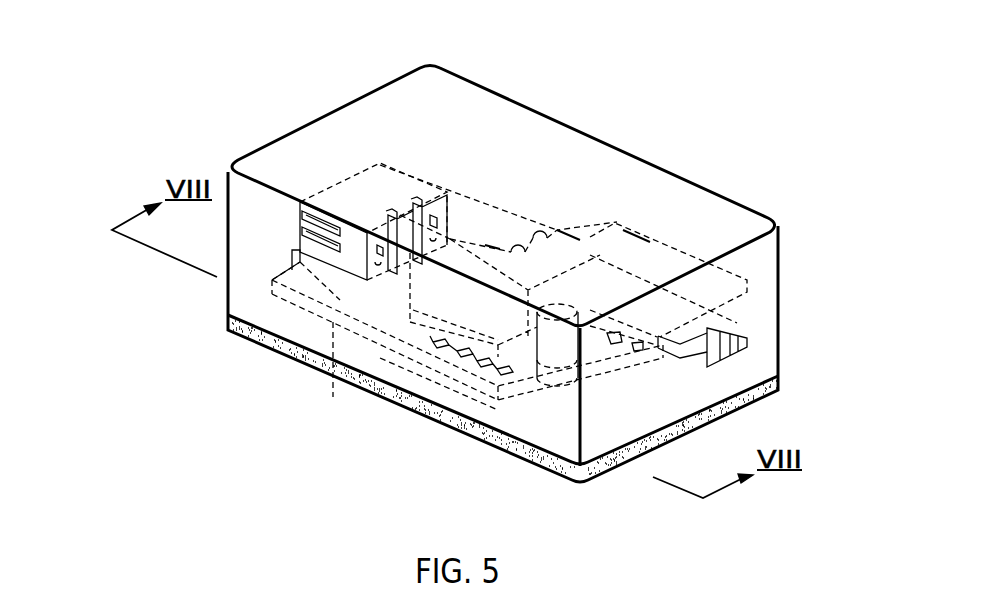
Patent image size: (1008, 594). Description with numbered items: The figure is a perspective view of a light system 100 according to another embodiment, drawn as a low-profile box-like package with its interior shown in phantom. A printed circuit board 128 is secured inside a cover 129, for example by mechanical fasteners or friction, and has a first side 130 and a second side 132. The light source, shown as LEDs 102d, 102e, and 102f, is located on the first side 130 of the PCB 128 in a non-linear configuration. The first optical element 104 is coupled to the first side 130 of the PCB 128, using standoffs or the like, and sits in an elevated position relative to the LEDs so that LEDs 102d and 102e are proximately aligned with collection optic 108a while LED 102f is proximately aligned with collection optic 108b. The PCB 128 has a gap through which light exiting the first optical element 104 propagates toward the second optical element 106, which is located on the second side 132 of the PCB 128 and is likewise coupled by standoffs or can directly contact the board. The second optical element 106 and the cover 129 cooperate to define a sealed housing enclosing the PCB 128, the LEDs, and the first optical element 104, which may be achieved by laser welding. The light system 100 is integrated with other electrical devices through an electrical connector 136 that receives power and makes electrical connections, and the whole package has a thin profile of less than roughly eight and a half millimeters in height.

The light system 100 is at (710, 76).
The first optical element 104 is at (557, 253).
The second optical element 106 is at (272, 347).
The printed circuit board 128 is at (482, 213).
The cover 129 is at (470, 78).
The first side 130 is at (340, 300).
The second side 132 is at (333, 394).
The electrical connector 136 is at (362, 192).
The LED 102d is at (396, 338).
The LED 102e is at (468, 365).
The LED 102f is at (618, 346).
The collection optic 108a is at (510, 368).
The collection optic 108b is at (650, 344).